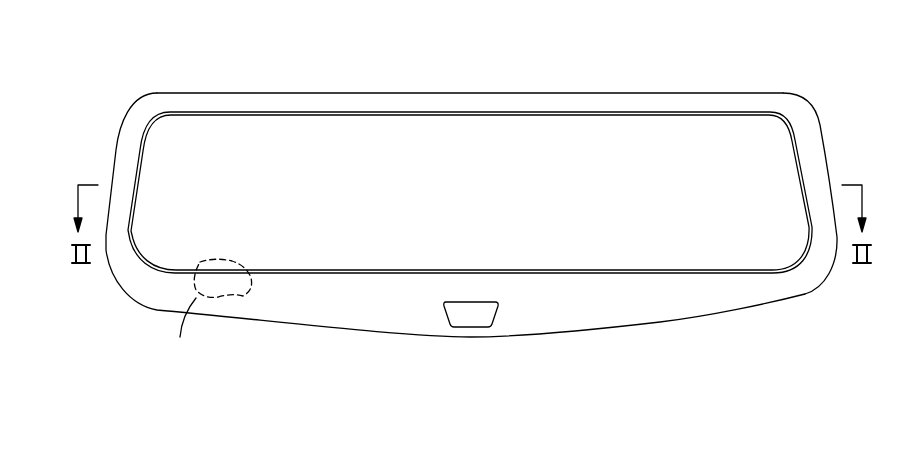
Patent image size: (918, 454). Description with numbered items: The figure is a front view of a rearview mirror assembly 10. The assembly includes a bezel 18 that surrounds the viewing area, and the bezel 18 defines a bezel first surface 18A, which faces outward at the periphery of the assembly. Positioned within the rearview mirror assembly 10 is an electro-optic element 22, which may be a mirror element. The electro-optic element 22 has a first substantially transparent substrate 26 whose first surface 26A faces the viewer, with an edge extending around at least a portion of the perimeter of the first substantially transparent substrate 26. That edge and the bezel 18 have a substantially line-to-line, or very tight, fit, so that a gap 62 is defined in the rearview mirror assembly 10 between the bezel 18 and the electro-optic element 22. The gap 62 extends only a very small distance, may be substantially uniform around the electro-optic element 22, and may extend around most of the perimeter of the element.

The rearview mirror assembly 10 is at (163, 53).
The bezel 18 is at (727, 98).
The bezel first surface 18A is at (805, 125).
The electro-optic element 22 is at (593, 145).
The first substantially transparent substrate 26 is at (482, 205).
The first surface 26A is at (445, 145).
The gap 62 is at (293, 278).